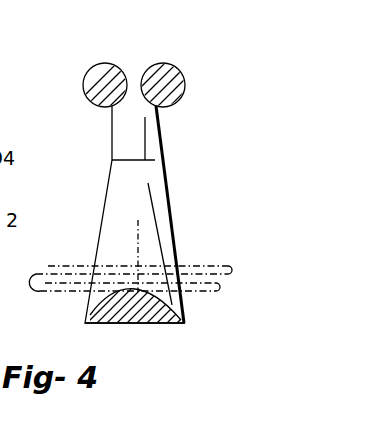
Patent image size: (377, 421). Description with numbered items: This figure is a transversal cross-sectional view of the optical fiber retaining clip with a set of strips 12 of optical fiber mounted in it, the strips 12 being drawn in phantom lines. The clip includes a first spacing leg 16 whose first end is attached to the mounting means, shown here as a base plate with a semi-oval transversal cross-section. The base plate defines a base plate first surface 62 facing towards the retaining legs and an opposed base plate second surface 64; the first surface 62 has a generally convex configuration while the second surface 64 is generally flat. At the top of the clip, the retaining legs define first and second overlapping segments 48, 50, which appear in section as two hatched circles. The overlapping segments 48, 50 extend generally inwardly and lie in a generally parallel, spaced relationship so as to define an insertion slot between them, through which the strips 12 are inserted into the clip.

The strips of optical fiber 12 is at (217, 263).
The first spacing leg 16 is at (140, 205).
The first overlapping segment 48 is at (185, 80).
The second overlapping segment 50 is at (88, 77).
The base plate first surface 62 is at (178, 293).
The base plate second surface 64 is at (160, 326).